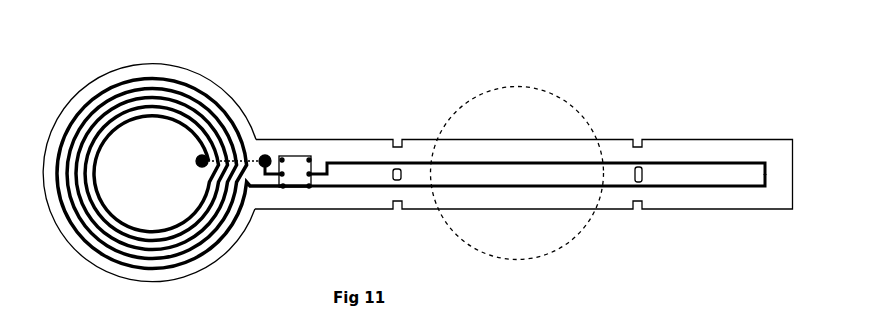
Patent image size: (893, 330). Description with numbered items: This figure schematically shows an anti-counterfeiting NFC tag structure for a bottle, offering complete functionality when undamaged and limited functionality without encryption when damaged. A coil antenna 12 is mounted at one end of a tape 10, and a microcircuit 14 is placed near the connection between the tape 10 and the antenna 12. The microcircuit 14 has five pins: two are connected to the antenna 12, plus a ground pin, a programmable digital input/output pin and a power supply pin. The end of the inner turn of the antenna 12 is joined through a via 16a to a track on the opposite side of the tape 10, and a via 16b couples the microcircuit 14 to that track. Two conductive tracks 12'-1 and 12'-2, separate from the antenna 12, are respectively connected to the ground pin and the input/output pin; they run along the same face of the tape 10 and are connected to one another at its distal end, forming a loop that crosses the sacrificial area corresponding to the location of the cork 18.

The tape 10 is at (375, 146).
The antenna 12 is at (170, 152).
The conductive track 12'-1 is at (524, 207).
The conductive track 12'-2 is at (537, 197).
The microcircuit 14 is at (293, 156).
The via 16a is at (198, 167).
The via 16b is at (265, 155).
The cork 18 is at (540, 255).